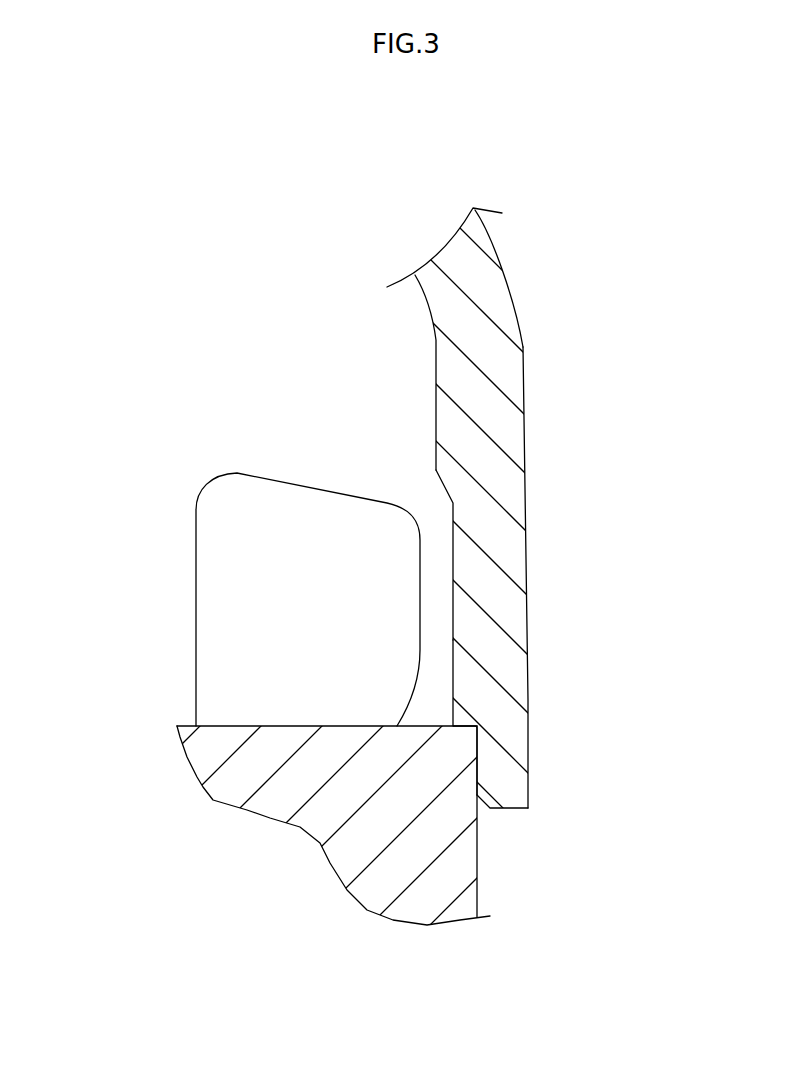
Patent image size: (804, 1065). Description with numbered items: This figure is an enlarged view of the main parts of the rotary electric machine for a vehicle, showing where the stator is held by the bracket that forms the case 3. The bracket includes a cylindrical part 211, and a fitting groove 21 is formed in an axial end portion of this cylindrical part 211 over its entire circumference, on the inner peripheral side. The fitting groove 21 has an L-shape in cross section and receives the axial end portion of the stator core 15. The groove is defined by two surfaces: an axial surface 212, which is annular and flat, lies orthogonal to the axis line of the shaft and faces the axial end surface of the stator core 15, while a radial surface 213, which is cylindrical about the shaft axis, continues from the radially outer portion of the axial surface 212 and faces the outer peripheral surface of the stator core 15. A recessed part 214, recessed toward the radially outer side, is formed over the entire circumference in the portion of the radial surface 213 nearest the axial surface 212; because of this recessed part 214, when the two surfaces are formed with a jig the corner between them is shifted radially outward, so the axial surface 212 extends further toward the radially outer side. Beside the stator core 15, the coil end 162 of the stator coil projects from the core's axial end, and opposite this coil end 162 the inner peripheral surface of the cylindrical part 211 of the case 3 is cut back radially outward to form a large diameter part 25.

The case 3 is at (483, 282).
The stator core 15 is at (233, 788).
The coil end 162 is at (237, 540).
The fitting groove 21 is at (687, 525).
The large diameter part 25 is at (453, 550).
The cylindrical part 211 is at (523, 557).
The axial surface 212 is at (460, 725).
The recessed part 214 is at (480, 739).
The radial surface 213 is at (478, 777).